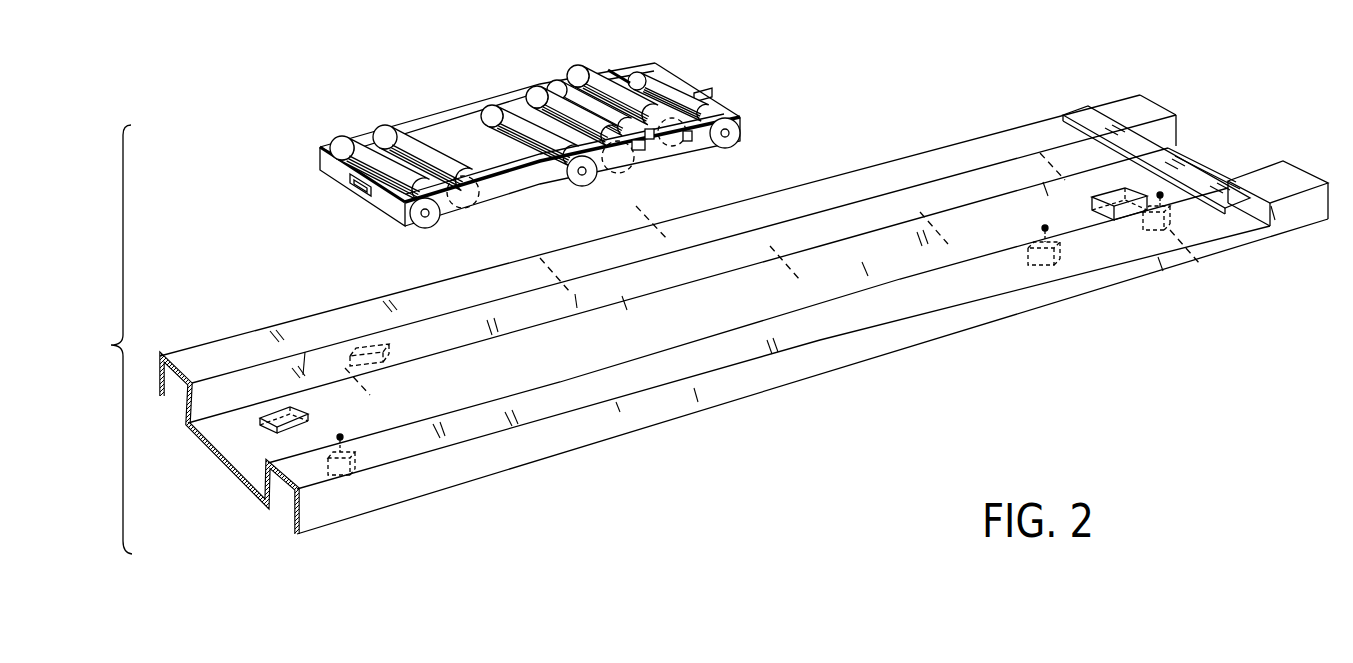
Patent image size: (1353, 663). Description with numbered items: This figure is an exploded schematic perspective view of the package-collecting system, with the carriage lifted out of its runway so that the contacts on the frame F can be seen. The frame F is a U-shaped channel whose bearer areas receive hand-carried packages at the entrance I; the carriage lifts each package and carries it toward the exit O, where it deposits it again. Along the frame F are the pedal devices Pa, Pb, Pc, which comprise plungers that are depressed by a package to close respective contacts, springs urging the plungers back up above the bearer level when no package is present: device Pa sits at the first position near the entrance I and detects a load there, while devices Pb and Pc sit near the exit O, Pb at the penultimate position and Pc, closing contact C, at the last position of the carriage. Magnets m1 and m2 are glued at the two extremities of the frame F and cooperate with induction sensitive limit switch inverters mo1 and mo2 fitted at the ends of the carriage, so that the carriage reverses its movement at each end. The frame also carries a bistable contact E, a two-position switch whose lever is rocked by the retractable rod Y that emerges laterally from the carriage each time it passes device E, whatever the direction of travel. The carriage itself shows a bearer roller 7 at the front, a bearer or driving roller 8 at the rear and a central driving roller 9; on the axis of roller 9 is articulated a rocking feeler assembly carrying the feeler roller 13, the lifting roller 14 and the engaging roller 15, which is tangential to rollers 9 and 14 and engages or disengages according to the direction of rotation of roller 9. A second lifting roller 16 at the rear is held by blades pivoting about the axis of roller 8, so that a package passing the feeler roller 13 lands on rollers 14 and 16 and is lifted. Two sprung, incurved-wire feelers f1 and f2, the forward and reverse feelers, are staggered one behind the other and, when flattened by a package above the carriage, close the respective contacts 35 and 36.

The bearer roller 7 is at (664, 92).
The bearer or driving roller 8 is at (355, 153).
The driving roller 9 is at (513, 129).
The feeler roller 13 is at (580, 82).
The lifting roller 14 is at (545, 86).
The engaging roller 15 is at (525, 95).
The lifting roller 16 is at (383, 126).
The contact 35 is at (644, 150).
The contact 36 is at (724, 150).
The retractable rod Y is at (623, 73).
The contact C is at (440, 104).
The induction sensitive limit switch inverter mo1 is at (340, 186).
The induction sensitive limit switch inverter mo2 is at (705, 93).
The forward feeler f1 is at (649, 139).
The reverse feeler f2 is at (688, 141).
The bistable contact E is at (373, 343).
The frame F is at (697, 390).
The magnet m1 is at (310, 413).
The magnet m2 is at (1087, 190).
The pedal device Pa is at (350, 478).
The pedal device Pb is at (1060, 267).
The pedal device Pc is at (1168, 232).
The exit O is at (1284, 124).
The entrance I is at (150, 508).